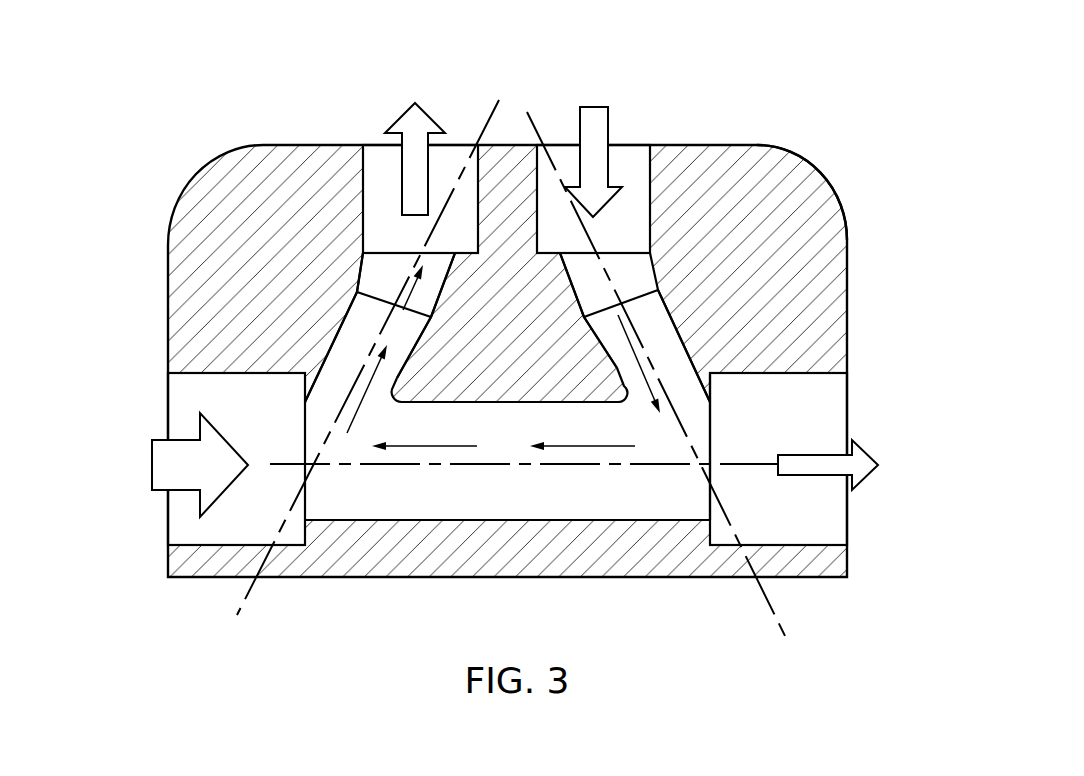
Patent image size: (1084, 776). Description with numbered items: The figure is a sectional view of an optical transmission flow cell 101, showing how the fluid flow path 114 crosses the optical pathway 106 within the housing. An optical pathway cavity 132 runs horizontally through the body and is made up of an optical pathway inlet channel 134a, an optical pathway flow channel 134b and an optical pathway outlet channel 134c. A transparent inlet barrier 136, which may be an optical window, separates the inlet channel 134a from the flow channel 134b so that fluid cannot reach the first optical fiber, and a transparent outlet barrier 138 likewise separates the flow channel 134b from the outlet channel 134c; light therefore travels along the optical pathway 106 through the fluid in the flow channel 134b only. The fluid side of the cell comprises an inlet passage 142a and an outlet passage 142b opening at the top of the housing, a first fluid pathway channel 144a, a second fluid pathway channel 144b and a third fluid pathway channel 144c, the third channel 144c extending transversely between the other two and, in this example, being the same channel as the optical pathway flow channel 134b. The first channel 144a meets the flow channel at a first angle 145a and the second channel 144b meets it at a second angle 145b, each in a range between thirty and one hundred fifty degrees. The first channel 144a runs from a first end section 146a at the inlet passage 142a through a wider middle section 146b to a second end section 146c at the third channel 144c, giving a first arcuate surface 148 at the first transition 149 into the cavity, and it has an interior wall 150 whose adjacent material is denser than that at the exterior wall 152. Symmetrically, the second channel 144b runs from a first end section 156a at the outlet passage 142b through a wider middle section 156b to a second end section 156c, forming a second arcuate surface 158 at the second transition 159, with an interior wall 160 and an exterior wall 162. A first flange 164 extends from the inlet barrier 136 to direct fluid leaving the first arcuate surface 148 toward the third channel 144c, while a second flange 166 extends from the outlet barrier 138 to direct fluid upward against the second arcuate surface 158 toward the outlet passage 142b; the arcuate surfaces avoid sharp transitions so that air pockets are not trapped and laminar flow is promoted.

The optical transmission flow cell 101 is at (755, 57).
The optical pathway 106 is at (172, 457).
The fluid flow path 114 is at (416, 106).
The optical pathway cavity 132 is at (430, 518).
The optical pathway inlet channel 134a is at (183, 543).
The optical pathway flow channel 134b is at (596, 522).
The optical pathway outlet channel 134c is at (838, 545).
The transparent inlet barrier 136 is at (307, 545).
The transparent outlet barrier 138 is at (718, 535).
The inlet passage 142a is at (655, 165).
The outlet passage 142b is at (368, 170).
The first fluid pathway channel 144a is at (700, 262).
The second fluid pathway channel 144b is at (325, 320).
The third fluid pathway channel 144c is at (440, 300).
The first angle 145a is at (350, 462).
The second angle 145b is at (670, 463).
The first end section 146a is at (830, 212).
The middle section 146b is at (618, 383).
The second end section 146c is at (700, 362).
The first arcuate surface 148 is at (700, 455).
The first transition 149 is at (622, 345).
The interior wall 150 is at (597, 375).
The exterior wall 152 is at (700, 337).
The first end section 156a is at (362, 253).
The middle section 156b is at (350, 300).
The second end section 156c is at (322, 380).
The second arcuate surface 158 is at (424, 432).
The second transition 159 is at (382, 392).
The interior wall 160 is at (450, 283).
The exterior wall 162 is at (358, 270).
The first flange 164 is at (312, 440).
The second flange 166 is at (712, 452).